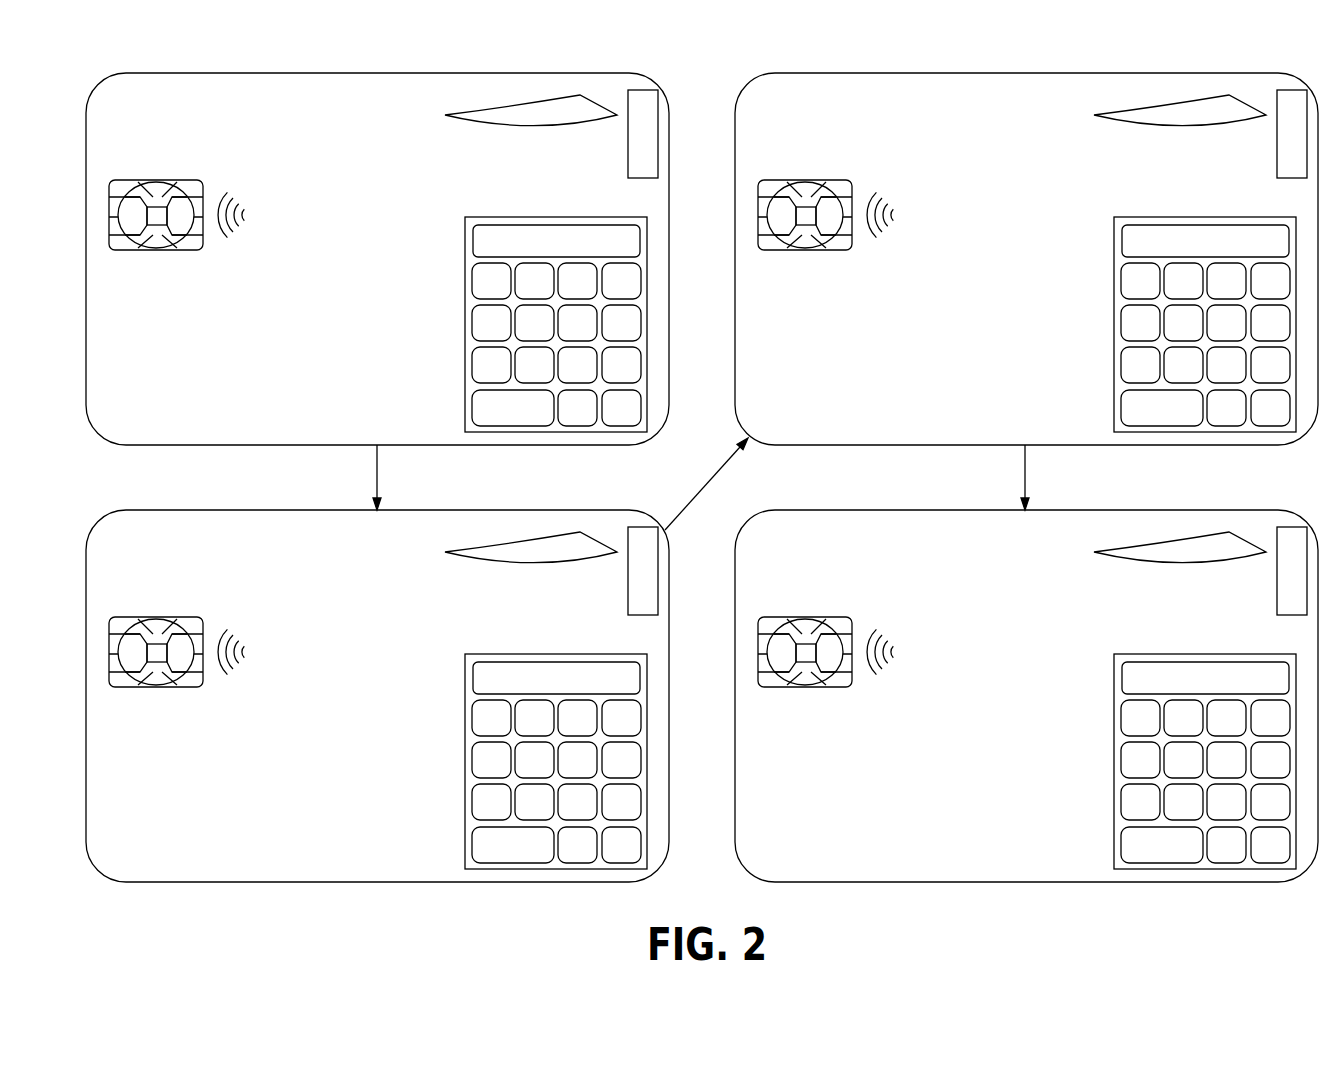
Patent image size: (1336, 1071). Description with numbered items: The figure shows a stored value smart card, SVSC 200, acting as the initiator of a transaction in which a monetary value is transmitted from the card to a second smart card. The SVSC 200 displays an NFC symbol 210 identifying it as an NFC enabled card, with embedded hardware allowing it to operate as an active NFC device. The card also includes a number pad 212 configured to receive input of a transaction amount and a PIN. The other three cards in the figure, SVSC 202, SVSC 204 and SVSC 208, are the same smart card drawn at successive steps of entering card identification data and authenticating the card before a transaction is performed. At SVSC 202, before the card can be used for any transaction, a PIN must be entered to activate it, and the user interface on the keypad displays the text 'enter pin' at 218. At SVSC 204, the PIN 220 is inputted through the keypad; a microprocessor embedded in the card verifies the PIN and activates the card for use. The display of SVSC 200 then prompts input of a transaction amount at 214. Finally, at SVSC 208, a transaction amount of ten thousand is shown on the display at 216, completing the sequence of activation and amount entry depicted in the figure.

The SVSC 200 is at (1026, 243).
The SVSC 202 is at (233, 73).
The SVSC 204 is at (377, 680).
The SVSC 208 is at (1026, 680).
The NFC symbol 210 is at (917, 214).
The number pad 212 is at (1167, 308).
The transaction amount prompt 214 is at (1205, 221).
The transaction amount display 216 is at (1205, 659).
The enter pin text 218 is at (557, 225).
The PIN 220 is at (556, 659).